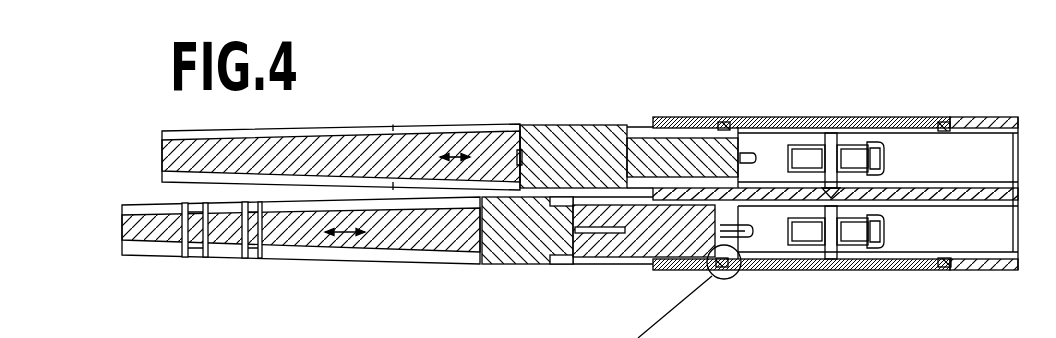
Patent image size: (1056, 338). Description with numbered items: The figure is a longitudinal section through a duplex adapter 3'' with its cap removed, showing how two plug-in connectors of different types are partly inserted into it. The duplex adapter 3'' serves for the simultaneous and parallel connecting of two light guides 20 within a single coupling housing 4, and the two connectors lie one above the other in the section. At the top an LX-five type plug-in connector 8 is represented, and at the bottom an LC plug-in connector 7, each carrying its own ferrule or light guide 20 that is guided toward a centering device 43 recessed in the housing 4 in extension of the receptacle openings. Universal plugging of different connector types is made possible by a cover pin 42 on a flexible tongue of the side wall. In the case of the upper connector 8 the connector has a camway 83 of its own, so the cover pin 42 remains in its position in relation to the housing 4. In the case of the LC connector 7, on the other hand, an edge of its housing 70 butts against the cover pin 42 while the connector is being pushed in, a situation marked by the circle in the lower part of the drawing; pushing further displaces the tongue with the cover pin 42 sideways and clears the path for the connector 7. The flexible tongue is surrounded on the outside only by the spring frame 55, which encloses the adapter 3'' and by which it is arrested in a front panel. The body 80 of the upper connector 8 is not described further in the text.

The coupling housing 4 is at (843, 194).
The LC plug-in connector 7 is at (642, 247).
The LX.5 plug-in connector 8 is at (586, 112).
The light guide 20 is at (750, 155).
The cover pin 42 is at (721, 122).
The centering device 43 is at (815, 150).
The spring frame 55 is at (866, 119).
The housing of LC connector 70 is at (655, 245).
The block 80 is at (612, 128).
The camway 83 is at (670, 136).
The duplex adapter 3'' is at (850, 298).